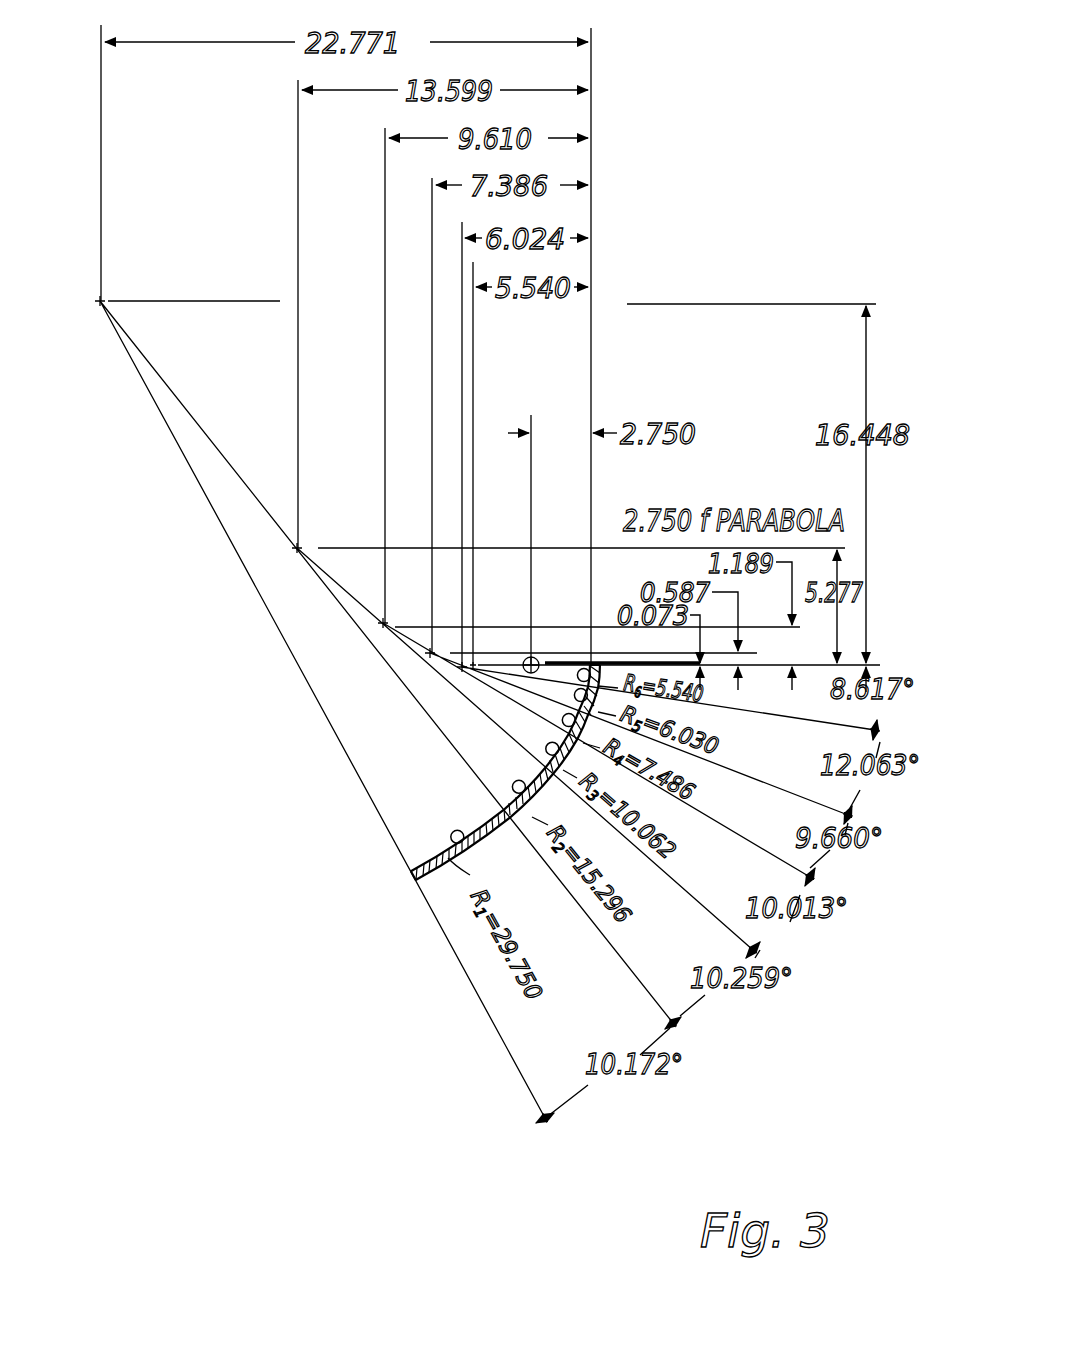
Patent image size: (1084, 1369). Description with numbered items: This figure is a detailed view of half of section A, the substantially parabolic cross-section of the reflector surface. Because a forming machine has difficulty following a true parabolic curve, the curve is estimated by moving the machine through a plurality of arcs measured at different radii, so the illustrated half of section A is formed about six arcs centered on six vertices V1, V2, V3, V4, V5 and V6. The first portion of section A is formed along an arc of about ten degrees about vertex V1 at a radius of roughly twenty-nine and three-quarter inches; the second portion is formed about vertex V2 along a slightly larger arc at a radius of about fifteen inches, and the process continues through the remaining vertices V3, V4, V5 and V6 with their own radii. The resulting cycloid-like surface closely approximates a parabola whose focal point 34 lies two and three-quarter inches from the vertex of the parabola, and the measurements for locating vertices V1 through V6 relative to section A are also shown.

The focal point 34 is at (537, 653).
The vertex V1 is at (100, 305).
The vertex V2 is at (297, 548).
The vertex V3 is at (383, 623).
The vertex V4 is at (430, 653).
The vertex V5 is at (462, 667).
The vertex V6 is at (473, 665).
The section A is at (410, 882).